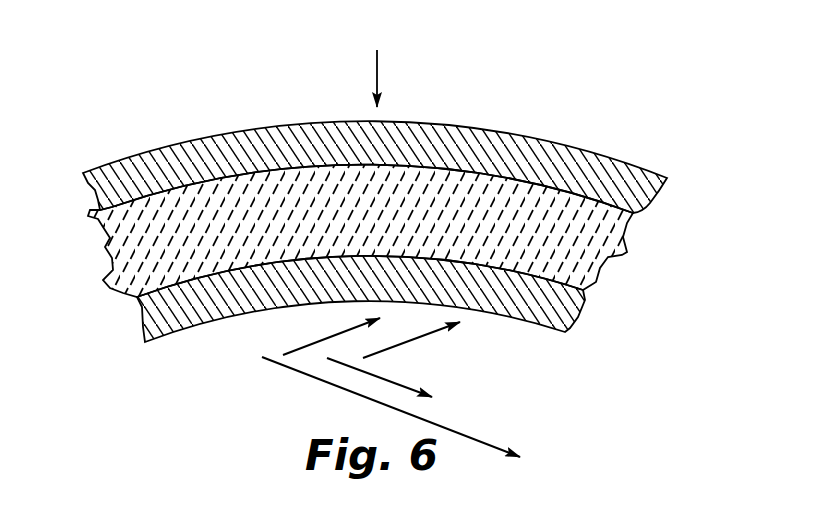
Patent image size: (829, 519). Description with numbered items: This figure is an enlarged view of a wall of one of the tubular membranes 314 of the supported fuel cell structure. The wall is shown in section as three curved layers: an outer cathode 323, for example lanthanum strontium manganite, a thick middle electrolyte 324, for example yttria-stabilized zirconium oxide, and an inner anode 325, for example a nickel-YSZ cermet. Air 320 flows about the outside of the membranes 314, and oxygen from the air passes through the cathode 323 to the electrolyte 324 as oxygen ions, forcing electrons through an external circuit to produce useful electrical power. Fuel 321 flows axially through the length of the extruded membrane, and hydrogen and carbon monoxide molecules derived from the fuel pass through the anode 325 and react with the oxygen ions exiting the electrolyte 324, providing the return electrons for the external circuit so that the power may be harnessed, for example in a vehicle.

The tubular membrane 314 is at (395, 230).
The air 320 is at (382, 65).
The fuel 321 is at (391, 387).
The cathode 323 is at (563, 143).
The electrolyte 324 is at (602, 248).
The anode 325 is at (573, 317).